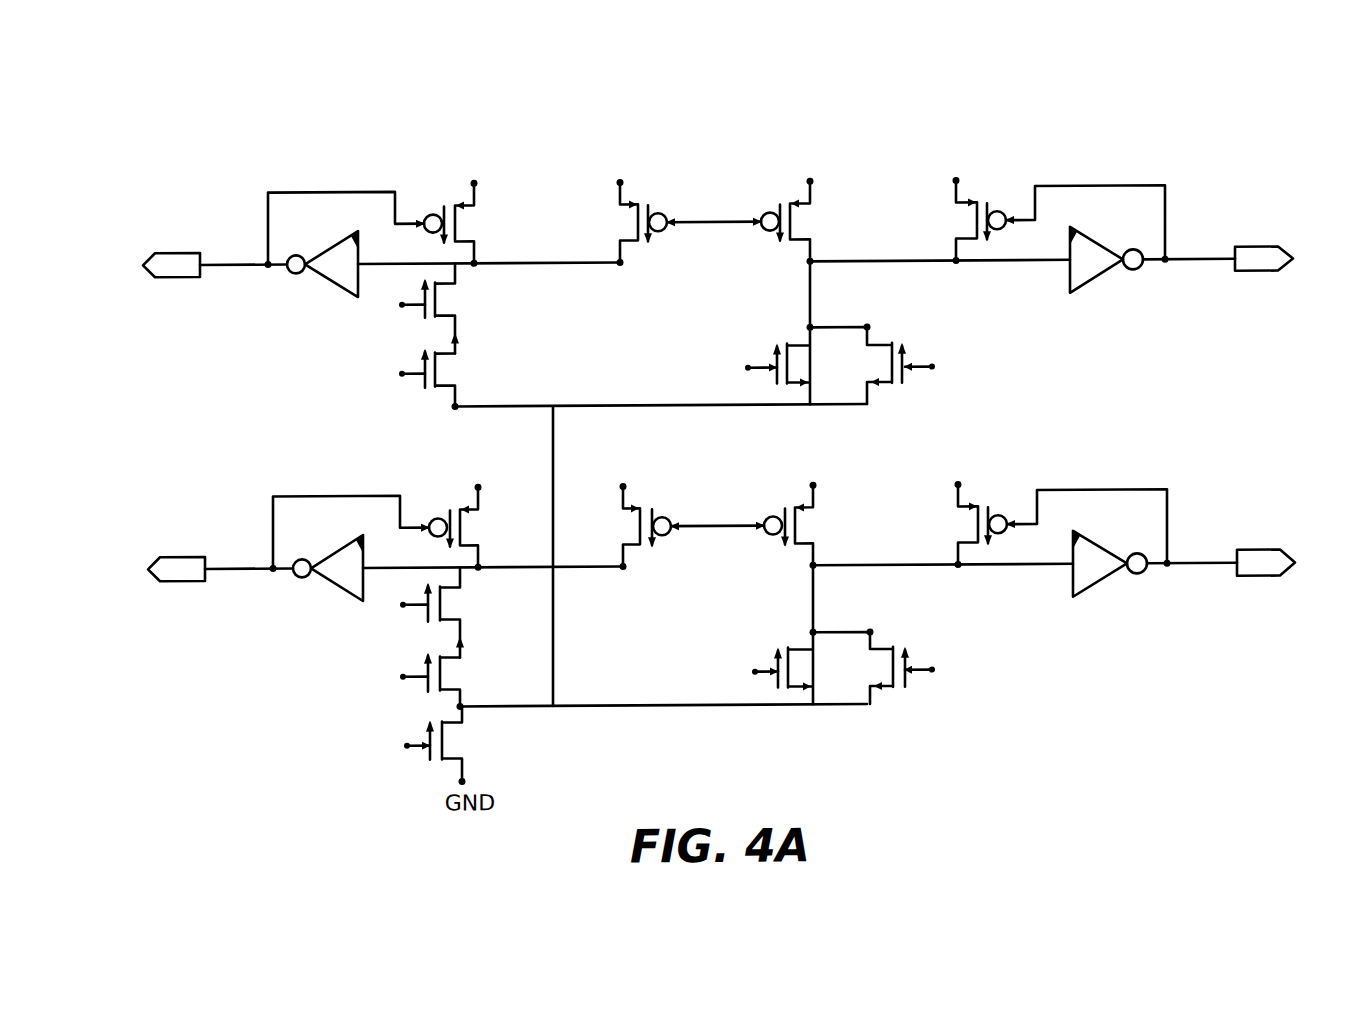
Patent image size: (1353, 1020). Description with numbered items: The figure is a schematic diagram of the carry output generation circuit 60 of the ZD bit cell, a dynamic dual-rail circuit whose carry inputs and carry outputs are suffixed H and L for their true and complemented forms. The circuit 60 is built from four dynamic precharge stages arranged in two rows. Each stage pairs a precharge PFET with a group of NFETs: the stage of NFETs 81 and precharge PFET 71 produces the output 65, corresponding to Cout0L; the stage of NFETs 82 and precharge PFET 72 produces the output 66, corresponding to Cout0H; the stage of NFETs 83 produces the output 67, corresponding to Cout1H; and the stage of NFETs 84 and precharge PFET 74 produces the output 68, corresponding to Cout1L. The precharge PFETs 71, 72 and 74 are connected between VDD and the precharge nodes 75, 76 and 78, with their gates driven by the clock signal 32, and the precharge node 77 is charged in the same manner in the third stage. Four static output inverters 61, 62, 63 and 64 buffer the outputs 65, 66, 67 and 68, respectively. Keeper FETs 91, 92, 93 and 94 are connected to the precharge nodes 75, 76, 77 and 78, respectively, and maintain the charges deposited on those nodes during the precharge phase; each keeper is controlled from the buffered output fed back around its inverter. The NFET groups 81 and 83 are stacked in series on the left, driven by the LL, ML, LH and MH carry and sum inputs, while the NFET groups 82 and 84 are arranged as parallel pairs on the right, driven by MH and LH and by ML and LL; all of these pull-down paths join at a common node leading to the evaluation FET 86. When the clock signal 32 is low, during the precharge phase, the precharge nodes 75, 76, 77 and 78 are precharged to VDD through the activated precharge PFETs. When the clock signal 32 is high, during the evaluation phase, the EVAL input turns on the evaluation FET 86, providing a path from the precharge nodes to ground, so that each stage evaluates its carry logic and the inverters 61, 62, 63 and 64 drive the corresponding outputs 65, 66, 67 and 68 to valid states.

The carry output generation circuit 60 is at (1258, 140).
The static output inverter 61 is at (337, 291).
The static output inverter 62 is at (1097, 278).
The static output inverter 63 is at (342, 595).
The static output inverter 64 is at (1099, 583).
The output 65 is at (225, 267).
The output 66 is at (1210, 263).
The output 67 is at (233, 570).
The output 68 is at (1213, 567).
The precharge PFET 71 is at (630, 223).
The precharge PFET 72 is at (803, 228).
The precharge PFET 74 is at (830, 530).
The precharge node 75 is at (382, 262).
The precharge node 76 is at (1048, 261).
The precharge node 77 is at (387, 566).
The precharge node 78 is at (1051, 565).
The NFETs 81 is at (473, 373).
The NFETs 82 is at (882, 345).
The NFETs 83 is at (477, 675).
The NFETs 84 is at (884, 650).
The evaluation FET 86 is at (457, 744).
The keeper FET 91 is at (469, 227).
The keeper FET 92 is at (964, 223).
The keeper FET 93 is at (473, 530).
The keeper FET 94 is at (967, 529).
The clock signal 32 is at (715, 492).